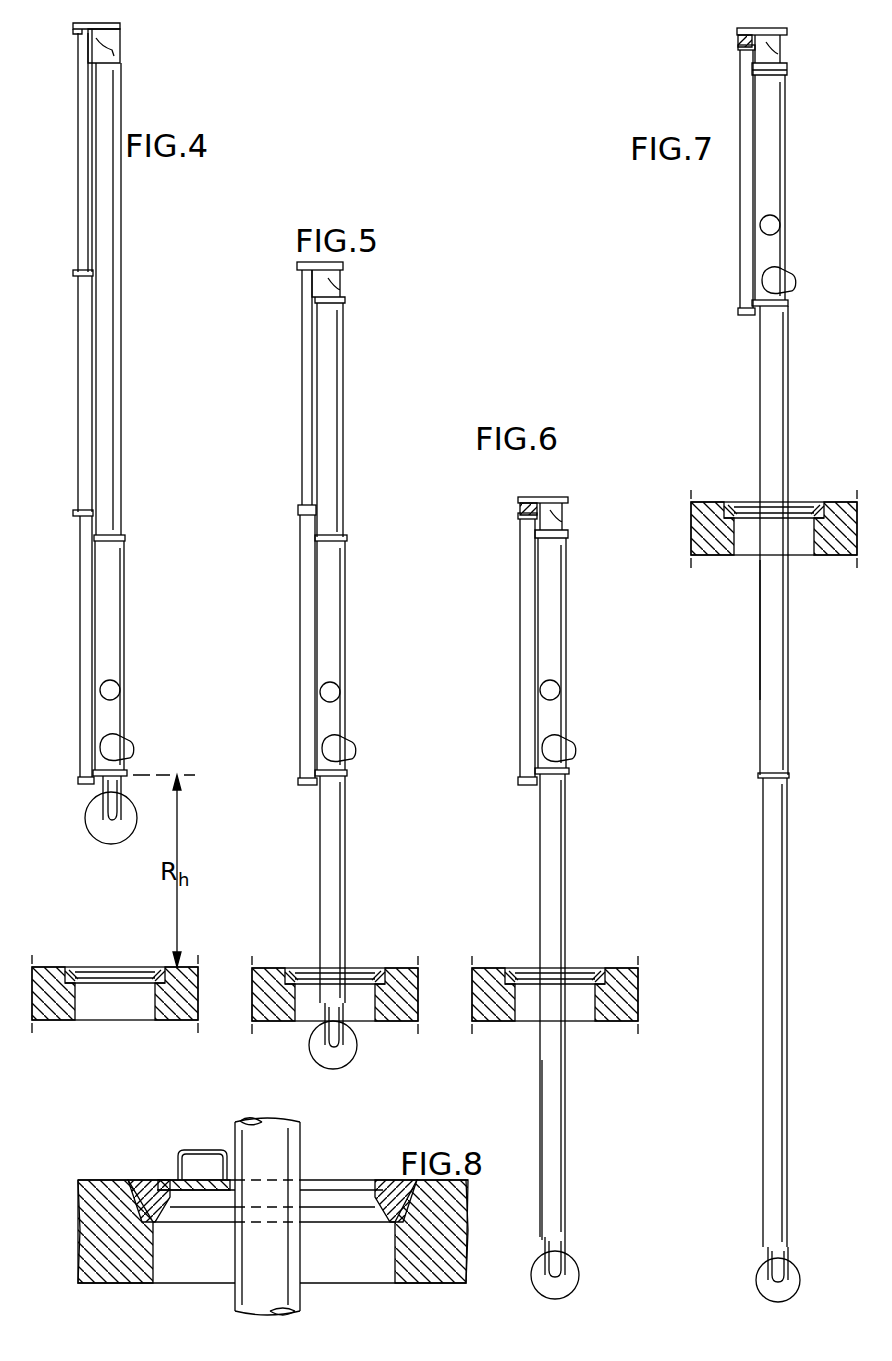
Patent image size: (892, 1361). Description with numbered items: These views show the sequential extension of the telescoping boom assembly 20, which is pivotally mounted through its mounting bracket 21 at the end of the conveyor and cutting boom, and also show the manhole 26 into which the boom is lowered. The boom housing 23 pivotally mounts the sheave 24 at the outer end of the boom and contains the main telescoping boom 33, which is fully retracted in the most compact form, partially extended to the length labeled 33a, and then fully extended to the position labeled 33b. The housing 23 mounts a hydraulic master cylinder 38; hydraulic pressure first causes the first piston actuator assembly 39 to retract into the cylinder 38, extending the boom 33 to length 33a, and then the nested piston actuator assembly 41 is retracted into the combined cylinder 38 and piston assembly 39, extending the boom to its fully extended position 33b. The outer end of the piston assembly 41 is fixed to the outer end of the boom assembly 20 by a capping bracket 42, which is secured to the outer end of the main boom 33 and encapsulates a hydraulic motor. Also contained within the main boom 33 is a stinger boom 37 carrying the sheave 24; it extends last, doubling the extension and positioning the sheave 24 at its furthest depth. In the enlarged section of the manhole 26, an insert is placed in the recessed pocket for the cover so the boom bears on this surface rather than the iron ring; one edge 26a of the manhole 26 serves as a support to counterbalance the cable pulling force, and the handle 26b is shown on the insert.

In FIG. 8, the boom assembly 20 is at (345, 1259).
In FIG. 4, the mounting bracket 21 is at (127, 746).
In FIG. 5, the mounting bracket 21 is at (354, 748).
In FIG. 6, the mounting bracket 21 is at (574, 749).
In FIG. 7, the mounting bracket 21 is at (781, 276).
In FIG. 4, the boom housing 23 is at (116, 615).
In FIG. 5, the boom housing 23 is at (340, 594).
In FIG. 6, the boom housing 23 is at (562, 602).
In FIG. 7, the boom housing 23 is at (774, 148).
In FIG. 4, the sheave 24 is at (114, 843).
In FIG. 5, the sheave 24 is at (349, 1058).
In FIG. 6, the sheave 24 is at (580, 1278).
In FIG. 7, the sheave 24 is at (758, 1282).
In FIG. 8, the manhole 26 is at (372, 1196).
In FIG. 8, the edge of the manhole 26a is at (178, 1202).
In FIG. 8, the handle 26b is at (174, 1186).
In FIG. 4, the main telescoping boom 33 is at (114, 352).
In FIG. 5, the main telescoping boom 33 is at (388, 421).
In FIG. 6, the main telescoping boom 33 is at (610, 839).
In FIG. 7, the main telescoping boom 33 is at (760, 390).
In FIG. 5, the partially extended main boom 33a is at (341, 858).
In FIG. 6, the fully extended main boom 33b is at (566, 1084).
In FIG. 7, the fully extended main boom 33b is at (761, 616).
In FIG. 7, the stinger boom 37 is at (766, 933).
In FIG. 4, the master cylinder 38 is at (82, 590).
In FIG. 5, the master cylinder 38 is at (305, 634).
In FIG. 6, the master cylinder 38 is at (526, 620).
In FIG. 7, the master cylinder 38 is at (738, 224).
In FIG. 4, the first piston actuator assembly 39 is at (82, 398).
In FIG. 5, the first piston actuator assembly 39 is at (298, 508).
In FIG. 6, the first piston actuator assembly 39 is at (519, 514).
In FIG. 7, the first piston actuator assembly 39 is at (741, 46).
In FIG. 4, the nested piston actuator assembly 41 is at (84, 174).
In FIG. 5, the nested piston actuator assembly 41 is at (306, 452).
In FIG. 6, the nested piston actuator assembly 41 is at (524, 500).
In FIG. 7, the nested piston actuator assembly 41 is at (740, 32).
In FIG. 4, the capping bracket 42 is at (113, 54).
In FIG. 5, the capping bracket 42 is at (340, 285).
In FIG. 6, the capping bracket 42 is at (560, 526).
In FIG. 7, the capping bracket 42 is at (777, 60).